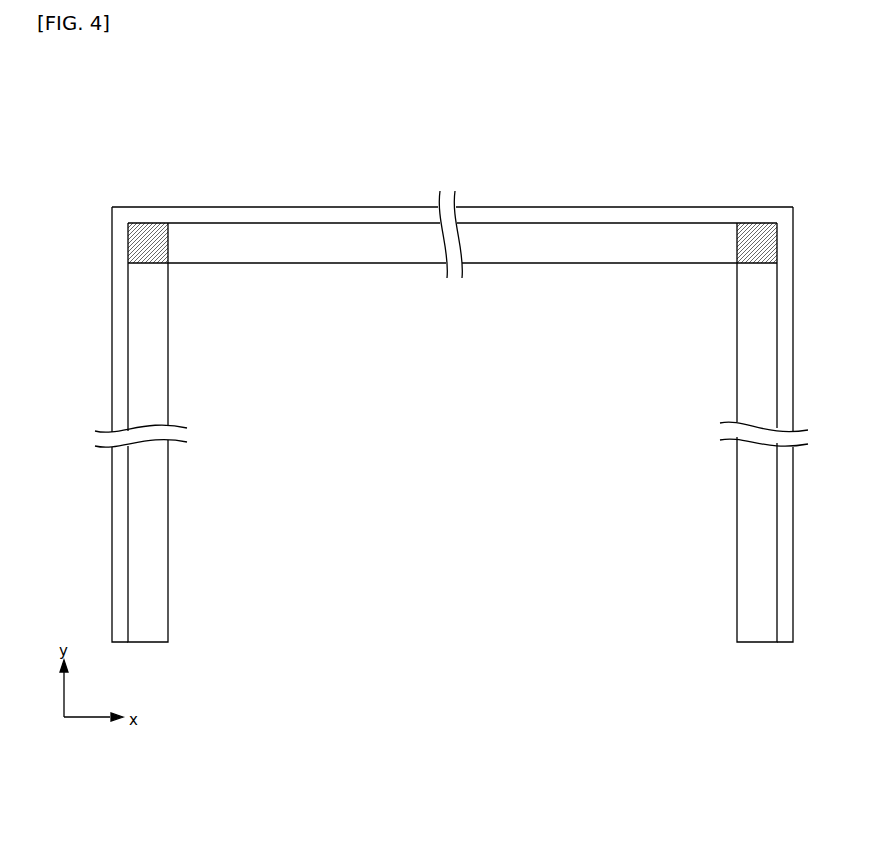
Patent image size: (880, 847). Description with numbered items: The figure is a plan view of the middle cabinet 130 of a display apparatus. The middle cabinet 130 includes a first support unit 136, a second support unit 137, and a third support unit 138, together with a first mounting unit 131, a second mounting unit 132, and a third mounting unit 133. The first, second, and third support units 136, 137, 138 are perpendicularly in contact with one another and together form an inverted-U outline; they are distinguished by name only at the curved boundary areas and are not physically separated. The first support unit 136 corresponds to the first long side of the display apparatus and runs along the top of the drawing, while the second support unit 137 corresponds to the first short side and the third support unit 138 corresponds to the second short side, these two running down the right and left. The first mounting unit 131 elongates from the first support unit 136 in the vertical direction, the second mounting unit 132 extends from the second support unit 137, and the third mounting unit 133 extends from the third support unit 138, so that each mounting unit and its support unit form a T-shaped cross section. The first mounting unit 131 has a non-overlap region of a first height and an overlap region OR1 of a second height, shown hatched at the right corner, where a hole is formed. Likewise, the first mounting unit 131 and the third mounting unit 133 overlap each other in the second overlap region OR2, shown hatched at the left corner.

The middle cabinet 130 is at (134, 89).
The first mounting unit 131 is at (577, 235).
The second mounting unit 132 is at (747, 348).
The third mounting unit 133 is at (160, 348).
The first support unit 136 is at (335, 215).
The second support unit 137 is at (785, 302).
The third support unit 138 is at (120, 302).
The overlap region OR1 is at (758, 232).
The second overlap region OR2 is at (143, 232).